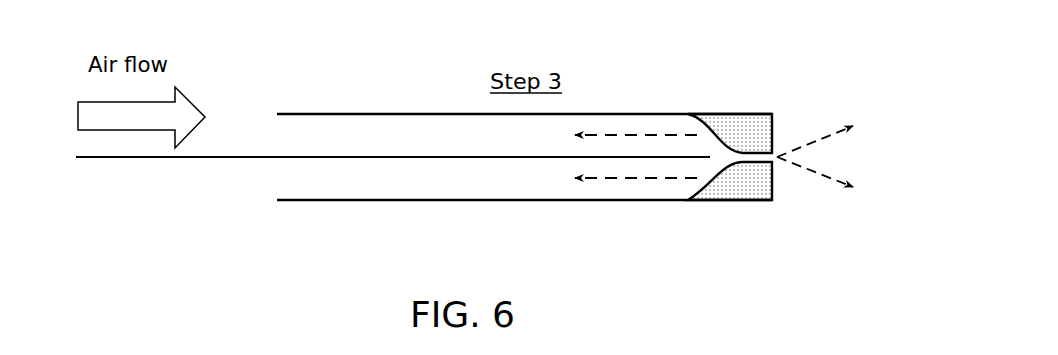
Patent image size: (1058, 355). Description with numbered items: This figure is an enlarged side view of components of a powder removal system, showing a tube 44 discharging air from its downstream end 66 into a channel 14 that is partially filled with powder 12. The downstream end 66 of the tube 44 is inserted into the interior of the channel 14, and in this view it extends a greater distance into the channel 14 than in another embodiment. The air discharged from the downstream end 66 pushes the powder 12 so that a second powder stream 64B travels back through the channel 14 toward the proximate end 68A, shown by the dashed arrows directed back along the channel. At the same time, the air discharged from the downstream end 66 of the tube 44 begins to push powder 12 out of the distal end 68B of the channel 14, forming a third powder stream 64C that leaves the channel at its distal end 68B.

The powder 12 is at (742, 161).
The channel 14 is at (377, 130).
The tube 44 is at (172, 159).
The downstream end 66 is at (707, 150).
The second powder stream 64B is at (650, 179).
The third powder stream 64C is at (823, 178).
The proximate end 68A is at (277, 201).
The distal end 68B is at (772, 201).